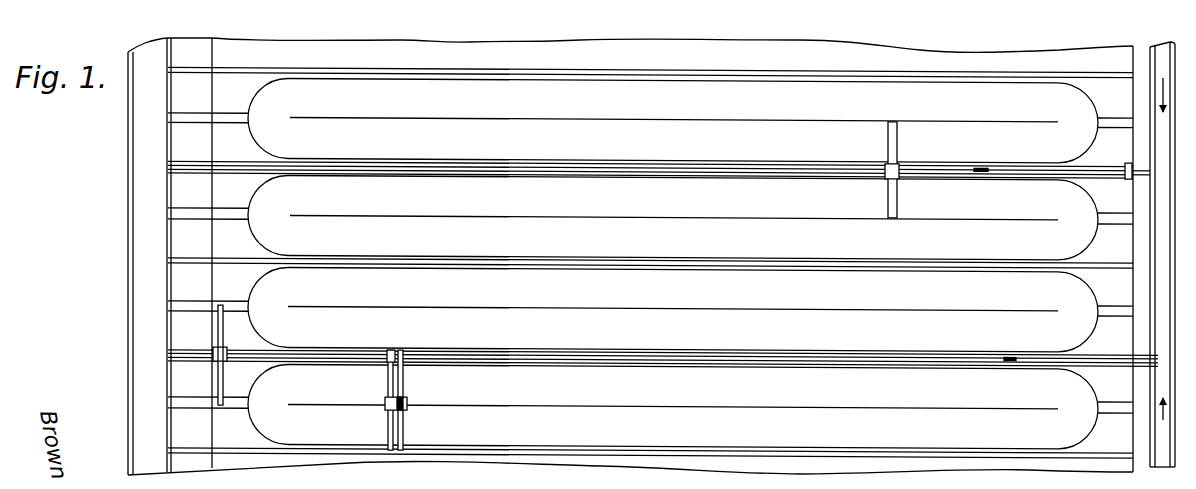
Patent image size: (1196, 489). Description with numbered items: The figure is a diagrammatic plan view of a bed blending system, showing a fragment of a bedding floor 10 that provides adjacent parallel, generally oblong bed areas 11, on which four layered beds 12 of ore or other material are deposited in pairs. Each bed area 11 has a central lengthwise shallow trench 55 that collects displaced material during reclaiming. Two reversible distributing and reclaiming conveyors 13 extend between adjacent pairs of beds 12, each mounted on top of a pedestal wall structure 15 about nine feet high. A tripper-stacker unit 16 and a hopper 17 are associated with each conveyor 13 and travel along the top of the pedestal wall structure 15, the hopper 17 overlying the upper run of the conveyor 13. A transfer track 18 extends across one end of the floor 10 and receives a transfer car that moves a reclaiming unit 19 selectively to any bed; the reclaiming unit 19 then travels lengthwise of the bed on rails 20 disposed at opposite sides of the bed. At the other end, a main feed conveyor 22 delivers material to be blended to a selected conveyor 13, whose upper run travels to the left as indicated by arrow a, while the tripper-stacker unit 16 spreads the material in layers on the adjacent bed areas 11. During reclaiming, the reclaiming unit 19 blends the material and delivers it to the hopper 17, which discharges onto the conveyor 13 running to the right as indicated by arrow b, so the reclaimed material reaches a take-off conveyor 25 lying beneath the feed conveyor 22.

The bedding floor 10 is at (430, 54).
The bed area 11 is at (500, 94).
The bed of layered material 12 is at (706, 397).
The distributing and reclaiming conveyor 13 is at (328, 171).
The pedestal wall structure 15 is at (524, 175).
The tripper-stacker unit 16 is at (885, 178).
The hopper 17 is at (1128, 178).
The transfer track 18 is at (140, 303).
The reclaiming unit 19 is at (409, 403).
The rails 20 is at (236, 72).
The main feed conveyor 22 is at (1163, 58).
The take-off conveyor 25 is at (1160, 440).
The central lengthwise shallow trench 55 is at (232, 122).
The arrow indicating leftward conveyor travel a is at (984, 172).
The arrow indicating rightward conveyor travel b is at (1002, 360).